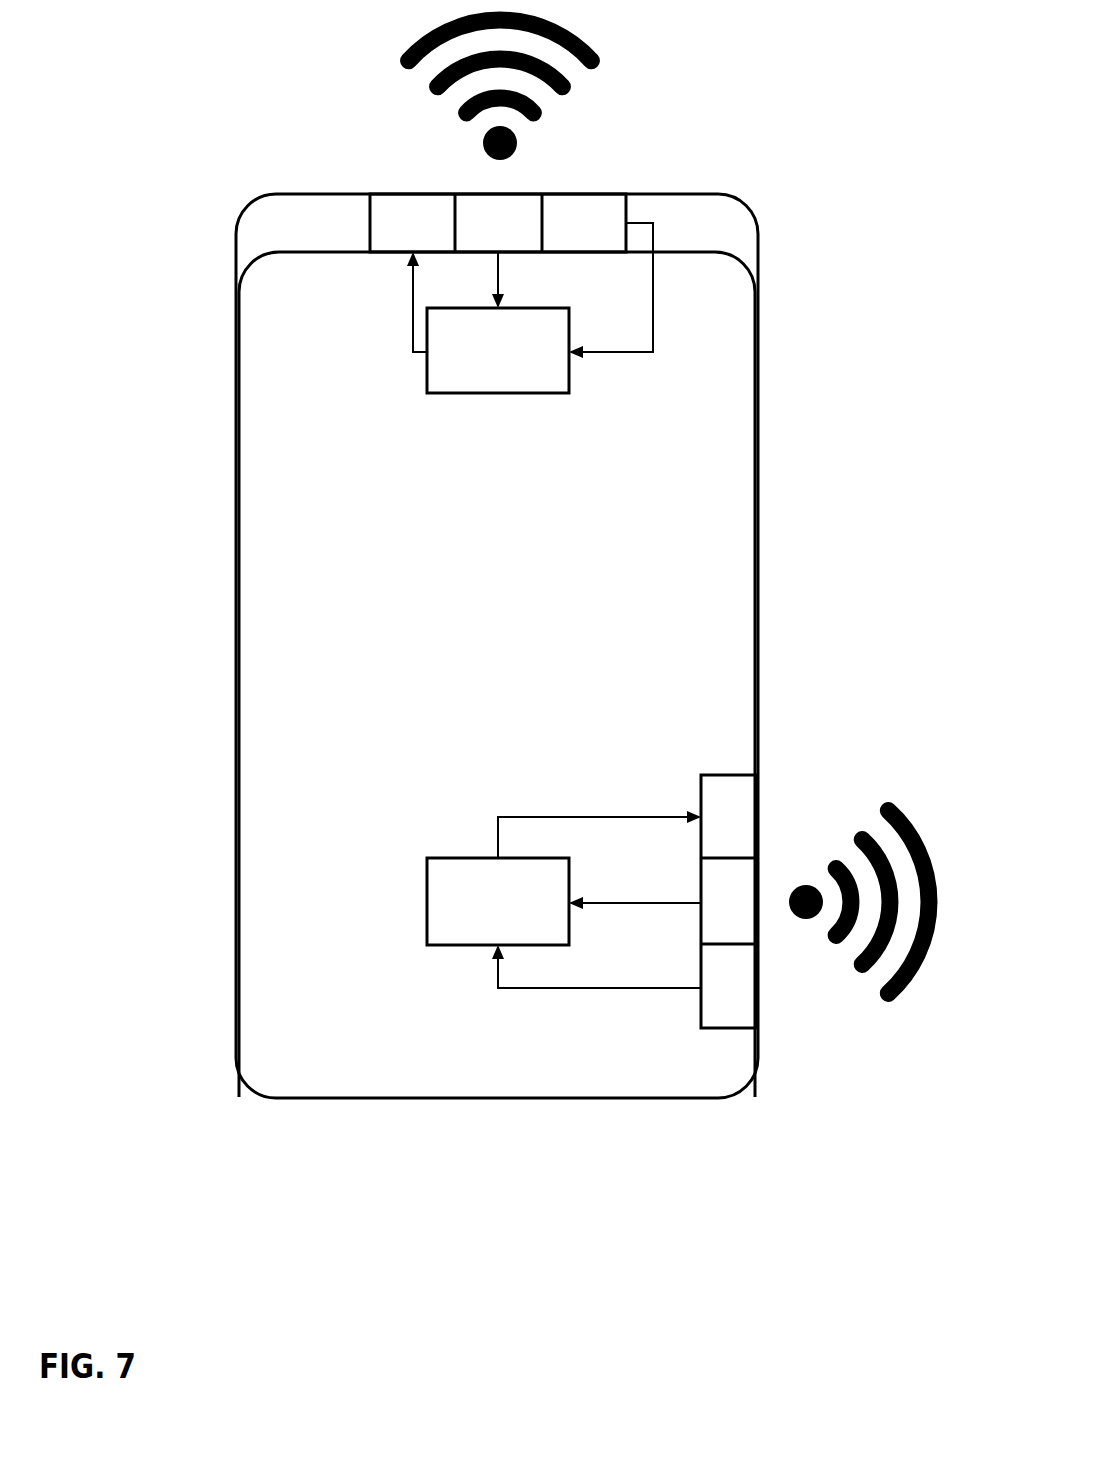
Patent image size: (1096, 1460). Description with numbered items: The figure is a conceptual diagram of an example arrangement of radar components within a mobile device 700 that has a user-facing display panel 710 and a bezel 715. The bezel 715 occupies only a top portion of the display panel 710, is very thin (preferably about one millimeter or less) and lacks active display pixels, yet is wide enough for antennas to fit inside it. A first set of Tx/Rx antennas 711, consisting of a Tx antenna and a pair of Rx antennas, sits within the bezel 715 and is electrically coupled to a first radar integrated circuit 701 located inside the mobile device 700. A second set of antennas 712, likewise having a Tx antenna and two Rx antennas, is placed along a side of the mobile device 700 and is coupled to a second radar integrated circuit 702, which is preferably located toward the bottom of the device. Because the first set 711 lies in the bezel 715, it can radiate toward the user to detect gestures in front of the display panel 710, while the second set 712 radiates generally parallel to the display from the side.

The mobile device 700 is at (938, 31).
The bezel 715 is at (248, 205).
The display panel 710 is at (517, 672).
The first set of Tx/Rx antennas 711 is at (558, 193).
The first radar integrated circuit 701 is at (479, 381).
The second set of antennas 712 is at (758, 1045).
The second radar integrated circuit 702 is at (479, 931).